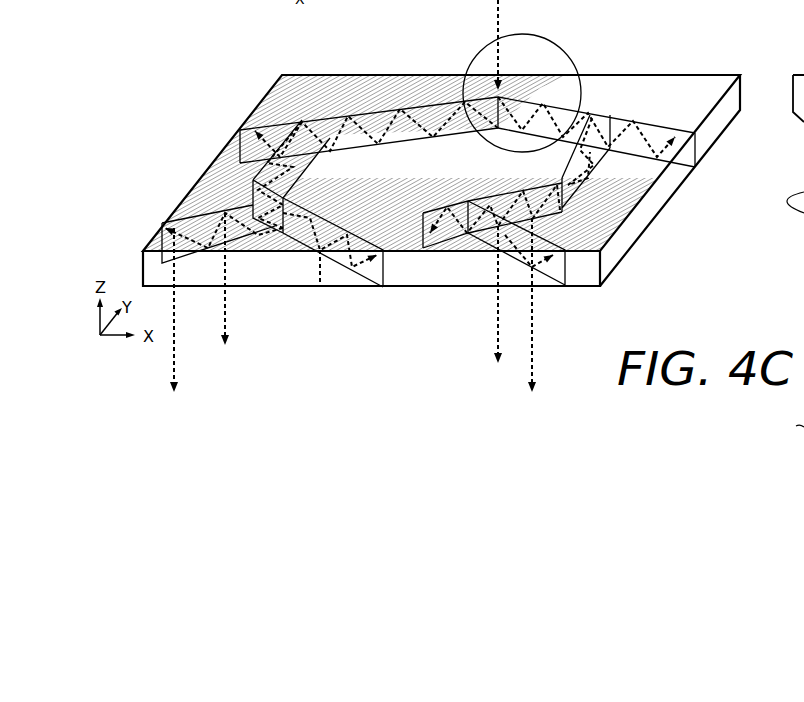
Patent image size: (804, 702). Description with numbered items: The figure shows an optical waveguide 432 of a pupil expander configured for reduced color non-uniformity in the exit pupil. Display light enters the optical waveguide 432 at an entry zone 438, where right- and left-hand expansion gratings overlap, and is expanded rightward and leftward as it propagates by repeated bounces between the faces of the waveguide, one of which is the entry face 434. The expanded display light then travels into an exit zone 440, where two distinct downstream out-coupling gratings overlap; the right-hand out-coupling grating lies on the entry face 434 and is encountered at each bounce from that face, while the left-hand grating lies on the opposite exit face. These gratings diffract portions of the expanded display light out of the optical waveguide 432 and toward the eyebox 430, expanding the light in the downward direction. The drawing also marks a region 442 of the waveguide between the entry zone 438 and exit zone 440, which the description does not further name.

The eyebox 430 is at (737, 424).
The optical waveguide 432 is at (756, 140).
The entry face 434 is at (712, 106).
The entry zone 438 is at (553, 69).
The exit zone 440 is at (693, 177).
The routing region 442 is at (184, 67).